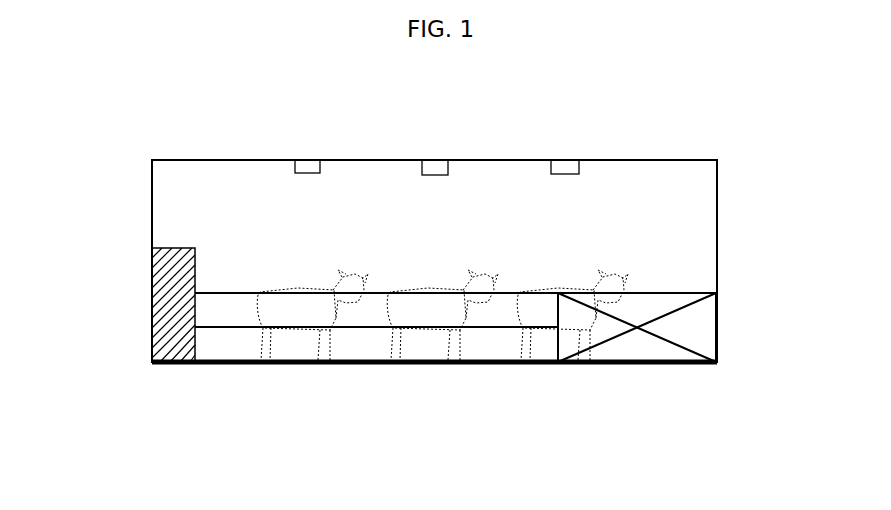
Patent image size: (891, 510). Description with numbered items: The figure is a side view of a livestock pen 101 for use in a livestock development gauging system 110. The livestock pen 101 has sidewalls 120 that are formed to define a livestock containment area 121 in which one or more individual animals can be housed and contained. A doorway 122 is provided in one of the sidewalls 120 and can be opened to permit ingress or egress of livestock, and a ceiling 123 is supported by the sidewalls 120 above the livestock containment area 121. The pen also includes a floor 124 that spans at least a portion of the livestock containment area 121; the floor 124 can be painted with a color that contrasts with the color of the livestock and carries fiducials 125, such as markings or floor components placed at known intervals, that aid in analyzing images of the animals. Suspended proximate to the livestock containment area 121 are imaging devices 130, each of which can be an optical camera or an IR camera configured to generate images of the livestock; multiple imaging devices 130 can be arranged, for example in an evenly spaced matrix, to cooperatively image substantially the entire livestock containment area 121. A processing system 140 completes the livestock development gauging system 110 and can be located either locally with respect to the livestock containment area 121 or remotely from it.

The livestock development gauging system 110 is at (742, 157).
The sidewalls 120 is at (717, 206).
The livestock containment area 121 is at (277, 280).
The doorway 122 is at (648, 348).
The ceiling 123 is at (210, 160).
The floor 124 is at (480, 365).
The fiducials 125 is at (386, 364).
The imaging device 130 is at (434, 168).
The processing system 140 is at (175, 345).
The livestock pen 101 is at (257, 371).